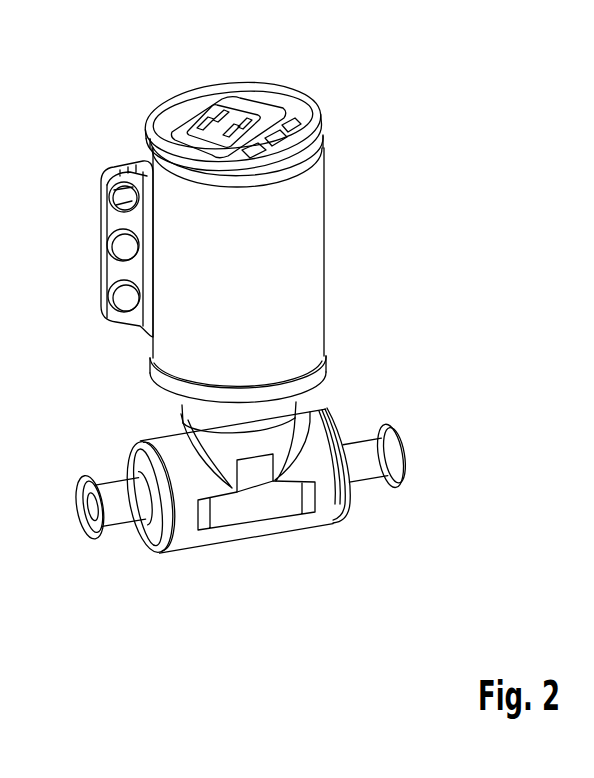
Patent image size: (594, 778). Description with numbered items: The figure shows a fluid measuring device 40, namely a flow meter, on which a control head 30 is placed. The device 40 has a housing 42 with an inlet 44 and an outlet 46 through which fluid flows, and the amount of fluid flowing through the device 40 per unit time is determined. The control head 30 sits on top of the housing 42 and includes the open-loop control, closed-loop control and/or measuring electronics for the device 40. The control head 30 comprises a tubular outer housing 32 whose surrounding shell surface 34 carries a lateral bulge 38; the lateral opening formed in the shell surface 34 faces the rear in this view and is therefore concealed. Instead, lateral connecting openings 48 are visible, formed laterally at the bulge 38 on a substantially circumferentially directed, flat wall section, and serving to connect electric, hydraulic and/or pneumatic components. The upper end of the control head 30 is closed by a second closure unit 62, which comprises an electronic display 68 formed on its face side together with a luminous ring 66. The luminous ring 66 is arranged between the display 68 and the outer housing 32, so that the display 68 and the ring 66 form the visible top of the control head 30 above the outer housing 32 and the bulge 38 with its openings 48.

The control head 30 is at (221, 231).
The tubular outer housing 32 is at (313, 206).
The shell surface 34 is at (307, 322).
The lateral bulge 38 is at (95, 222).
The fluid measuring device 40 is at (251, 465).
The housing 42 is at (335, 505).
The inlet 44 is at (83, 515).
The outlet 46 is at (404, 452).
The lateral connecting openings 48 is at (116, 286).
The second closure unit 62 is at (314, 117).
The luminous ring 66 is at (319, 160).
The electronic display 68 is at (263, 89).